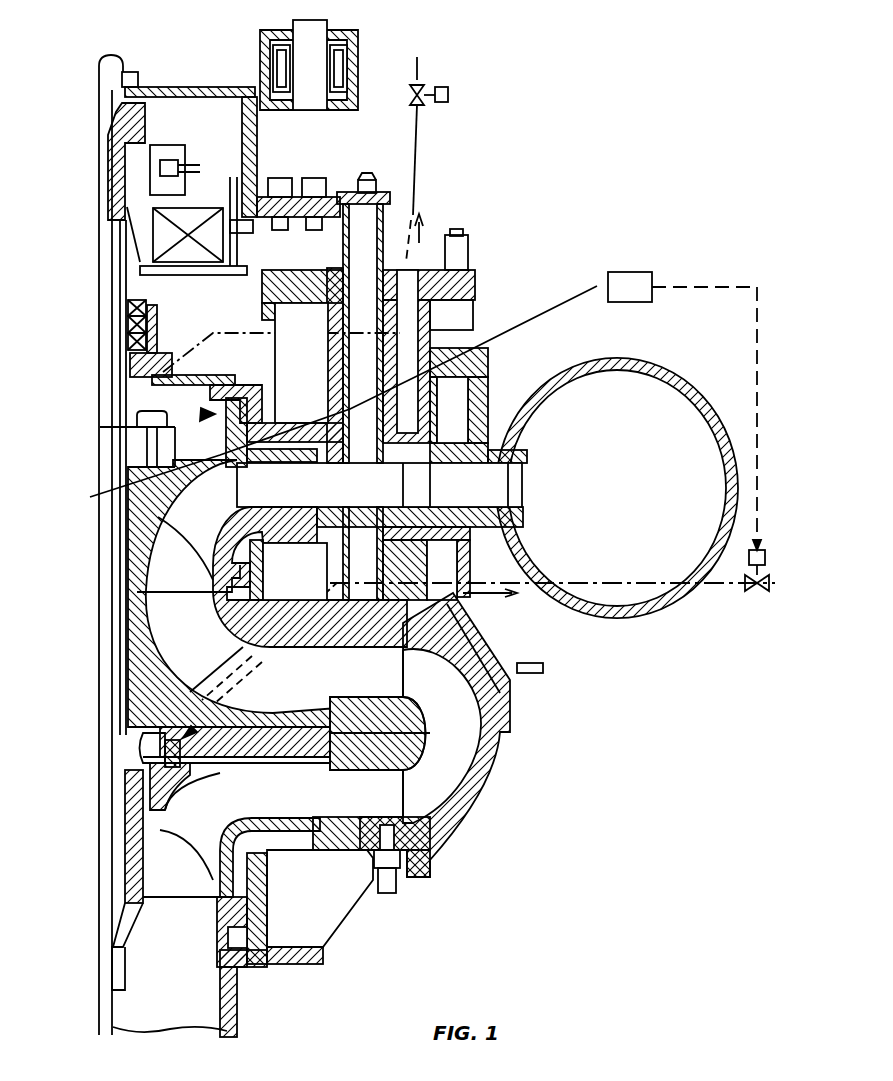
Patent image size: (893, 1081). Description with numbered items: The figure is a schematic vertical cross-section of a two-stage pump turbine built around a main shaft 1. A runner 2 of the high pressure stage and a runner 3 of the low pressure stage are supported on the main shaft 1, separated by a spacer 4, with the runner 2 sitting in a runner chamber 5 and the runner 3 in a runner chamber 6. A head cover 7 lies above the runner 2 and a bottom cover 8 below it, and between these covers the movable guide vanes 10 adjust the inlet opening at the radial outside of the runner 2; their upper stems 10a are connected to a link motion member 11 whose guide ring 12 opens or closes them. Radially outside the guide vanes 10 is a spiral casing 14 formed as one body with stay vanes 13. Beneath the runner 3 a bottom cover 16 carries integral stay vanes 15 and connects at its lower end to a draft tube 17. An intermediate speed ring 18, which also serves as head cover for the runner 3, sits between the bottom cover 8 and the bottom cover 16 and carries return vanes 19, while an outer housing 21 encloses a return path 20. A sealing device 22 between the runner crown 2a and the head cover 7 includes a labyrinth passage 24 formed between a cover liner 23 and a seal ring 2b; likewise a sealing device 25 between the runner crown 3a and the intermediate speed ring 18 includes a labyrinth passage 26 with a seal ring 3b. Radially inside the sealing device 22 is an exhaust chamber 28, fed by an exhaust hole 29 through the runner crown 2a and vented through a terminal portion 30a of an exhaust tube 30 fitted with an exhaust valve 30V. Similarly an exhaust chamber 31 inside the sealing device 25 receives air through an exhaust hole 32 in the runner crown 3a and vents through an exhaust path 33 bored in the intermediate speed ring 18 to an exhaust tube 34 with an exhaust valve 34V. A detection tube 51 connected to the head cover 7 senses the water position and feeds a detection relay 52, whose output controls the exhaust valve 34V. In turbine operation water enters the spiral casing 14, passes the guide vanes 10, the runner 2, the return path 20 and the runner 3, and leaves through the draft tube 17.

The main shaft 1 is at (90, 497).
The runner of a high pressure stage 2 is at (138, 553).
The runner crown 2a is at (277, 463).
The seal ring 2b is at (172, 445).
The runner of a low pressure stage 3 is at (128, 871).
The runner crown 3a is at (213, 770).
The seal ring 3b is at (128, 742).
The spacer 4 is at (127, 627).
The runner housing or chamber of a high pressure stage 5 is at (268, 550).
The runner housing or chamber of a low pressure stage 6 is at (267, 845).
The head cover 7 is at (290, 435).
The bottom cover 8 is at (316, 532).
The movable guide vanes 10 is at (387, 487).
The upper stems 10a is at (358, 357).
The link motion member 11 is at (336, 178).
The guide ring 12 is at (258, 150).
The stay vanes 13 is at (503, 487).
The spiral casing 14 is at (637, 607).
The stay vanes 15 is at (430, 822).
The bottom cover 16 is at (327, 845).
The draft tube 17 is at (227, 1020).
The intermediate speed ring 18 is at (257, 770).
The return vanes 19 is at (322, 687).
The return path 20 is at (440, 780).
The outer housing 21 is at (487, 760).
The device for sealing water 22 is at (210, 416).
The cover liner 23 is at (260, 394).
The labyrinth passage 24 is at (208, 463).
The device for sealing water 25 is at (230, 703).
The labyrinth passage 26 is at (190, 790).
The exhaust chamber 28 is at (198, 419).
The exhaust hole 29 is at (195, 483).
The exhaust tube 30 is at (421, 150).
The terminal portion 30a is at (162, 370).
The exhaust valve 30V is at (418, 72).
The exhaust chamber 31 is at (113, 733).
The exhaust hole 32 is at (140, 791).
The exhaust path 33 is at (187, 733).
The exhaust tube 34 is at (475, 583).
The exhaust valve 34V is at (757, 592).
The detection tube 51 is at (549, 310).
The detection relay 52 is at (630, 284).